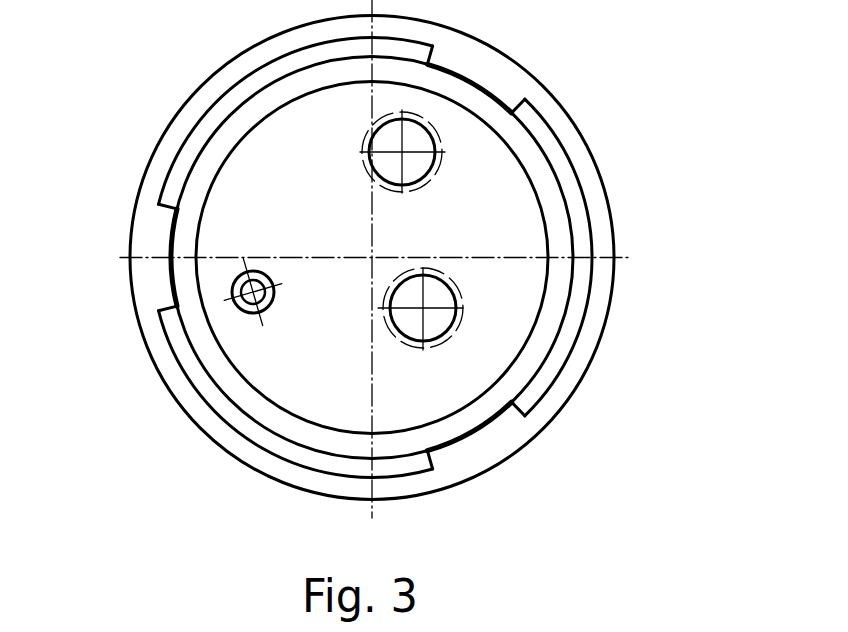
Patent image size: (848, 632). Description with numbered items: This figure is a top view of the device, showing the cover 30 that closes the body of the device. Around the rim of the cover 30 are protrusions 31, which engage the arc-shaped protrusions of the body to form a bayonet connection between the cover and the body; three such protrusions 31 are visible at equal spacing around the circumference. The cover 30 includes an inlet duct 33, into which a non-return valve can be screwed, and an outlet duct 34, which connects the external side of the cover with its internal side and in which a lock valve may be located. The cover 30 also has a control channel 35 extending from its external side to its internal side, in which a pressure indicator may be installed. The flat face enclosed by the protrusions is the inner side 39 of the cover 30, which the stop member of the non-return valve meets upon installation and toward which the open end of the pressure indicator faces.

The cover 30 is at (427, 258).
The protrusions 31 is at (385, 257).
The inlet duct 33 is at (550, 139).
The outlet duct 34 is at (171, 333).
The control channel 35 is at (559, 351).
The inner side of cover 39 is at (322, 234).